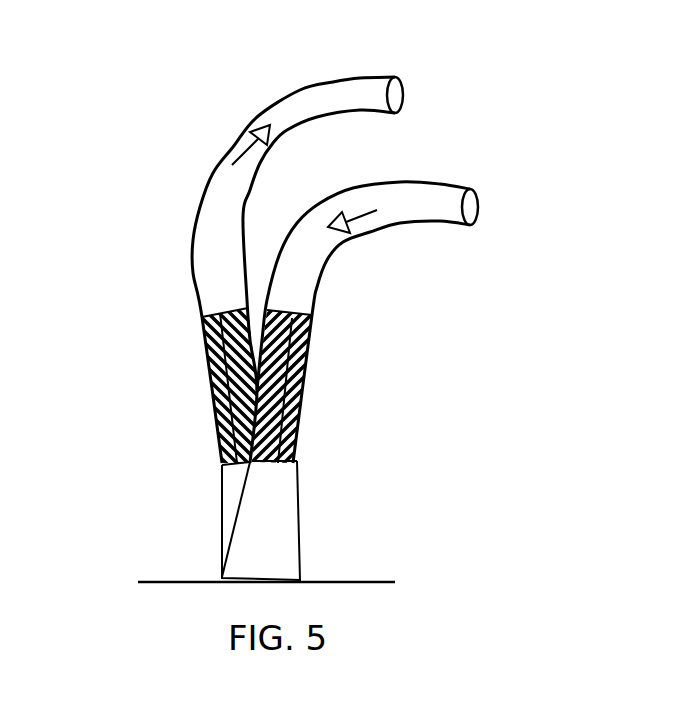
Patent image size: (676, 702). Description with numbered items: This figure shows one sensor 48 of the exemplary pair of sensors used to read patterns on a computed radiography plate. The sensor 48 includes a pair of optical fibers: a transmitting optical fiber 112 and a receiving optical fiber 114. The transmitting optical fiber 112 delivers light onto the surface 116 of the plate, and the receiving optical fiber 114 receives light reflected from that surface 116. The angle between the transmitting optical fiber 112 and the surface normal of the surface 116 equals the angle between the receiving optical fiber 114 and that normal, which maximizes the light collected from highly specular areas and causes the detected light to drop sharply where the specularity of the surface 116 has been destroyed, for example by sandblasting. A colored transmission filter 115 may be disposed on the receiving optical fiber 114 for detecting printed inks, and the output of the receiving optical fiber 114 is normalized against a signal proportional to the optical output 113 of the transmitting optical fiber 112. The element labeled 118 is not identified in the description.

The sensor 48 is at (507, 47).
The transmitting optical fiber 112 is at (447, 188).
The optical output 113 is at (362, 217).
The receiving optical fiber 114 is at (337, 249).
The colored transmission filter 115 is at (404, 94).
The surface 116 is at (372, 580).
The tube bend section 118 is at (220, 490).